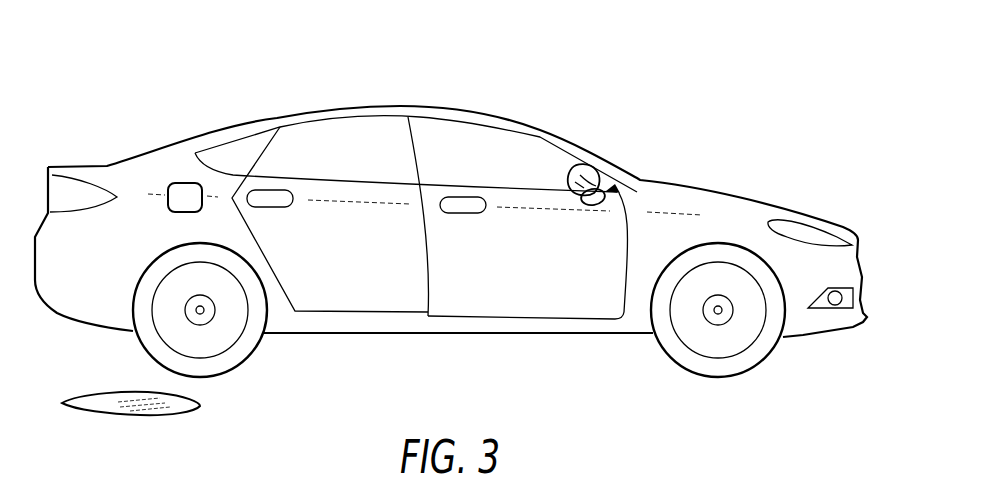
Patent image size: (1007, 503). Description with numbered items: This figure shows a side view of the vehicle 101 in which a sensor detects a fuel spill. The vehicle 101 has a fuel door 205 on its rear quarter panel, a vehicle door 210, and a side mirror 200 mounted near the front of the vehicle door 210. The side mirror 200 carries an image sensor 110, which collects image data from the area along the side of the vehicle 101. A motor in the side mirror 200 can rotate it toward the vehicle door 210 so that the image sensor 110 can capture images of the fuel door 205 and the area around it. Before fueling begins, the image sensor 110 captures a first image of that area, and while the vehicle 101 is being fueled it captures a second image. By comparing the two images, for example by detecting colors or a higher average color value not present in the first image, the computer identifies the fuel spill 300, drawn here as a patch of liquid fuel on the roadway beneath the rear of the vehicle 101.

The vehicle 101 is at (444, 104).
The image sensor 110 is at (603, 188).
The side mirror 200 is at (582, 165).
The fuel door 205 is at (180, 183).
The vehicle door 210 is at (548, 293).
The fuel spill 300 is at (108, 410).